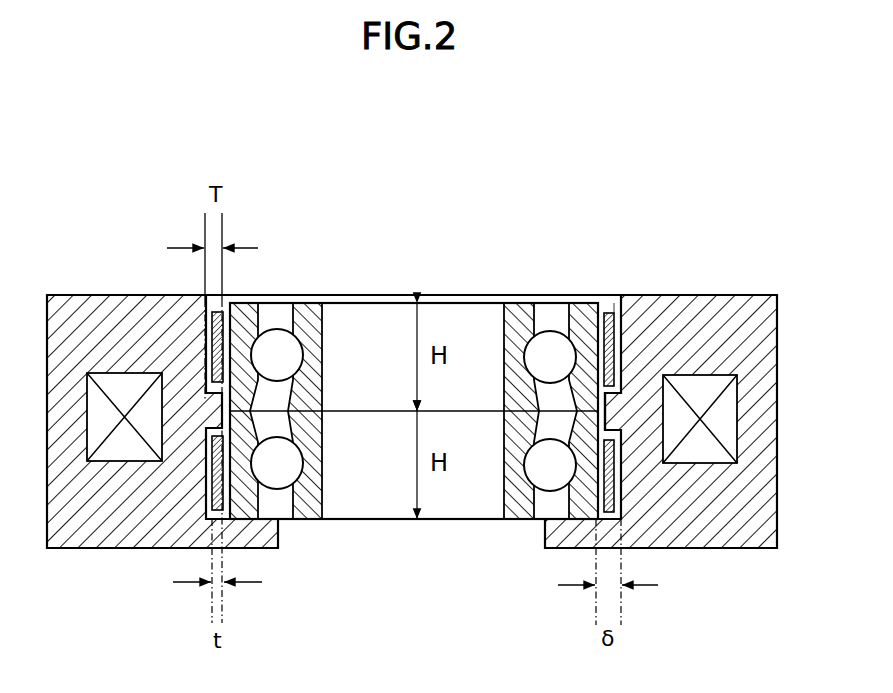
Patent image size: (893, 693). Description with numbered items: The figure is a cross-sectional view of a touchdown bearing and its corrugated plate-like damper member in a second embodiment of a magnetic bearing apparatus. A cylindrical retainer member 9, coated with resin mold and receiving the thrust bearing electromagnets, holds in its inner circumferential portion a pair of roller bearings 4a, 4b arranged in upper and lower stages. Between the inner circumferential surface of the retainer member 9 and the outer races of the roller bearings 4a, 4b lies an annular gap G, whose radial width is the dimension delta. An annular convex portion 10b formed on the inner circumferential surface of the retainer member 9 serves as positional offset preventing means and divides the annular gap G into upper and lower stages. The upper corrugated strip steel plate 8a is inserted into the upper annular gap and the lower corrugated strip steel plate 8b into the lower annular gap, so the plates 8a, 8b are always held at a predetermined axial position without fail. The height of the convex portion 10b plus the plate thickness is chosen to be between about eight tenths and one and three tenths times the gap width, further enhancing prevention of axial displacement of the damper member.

The first rotary bearing 4a is at (274, 352).
The roller bearing 4b is at (278, 462).
The upper corrugated strip steel plate 8a is at (604, 327).
The lower corrugated strip steel plate 8b is at (604, 487).
The cylindrical retainer member 9 is at (713, 330).
The annular convex portion 10b is at (607, 407).
The annular gap G is at (610, 305).